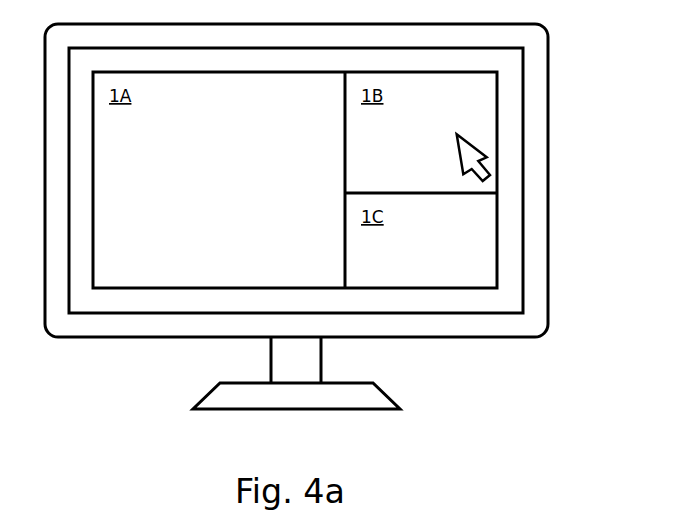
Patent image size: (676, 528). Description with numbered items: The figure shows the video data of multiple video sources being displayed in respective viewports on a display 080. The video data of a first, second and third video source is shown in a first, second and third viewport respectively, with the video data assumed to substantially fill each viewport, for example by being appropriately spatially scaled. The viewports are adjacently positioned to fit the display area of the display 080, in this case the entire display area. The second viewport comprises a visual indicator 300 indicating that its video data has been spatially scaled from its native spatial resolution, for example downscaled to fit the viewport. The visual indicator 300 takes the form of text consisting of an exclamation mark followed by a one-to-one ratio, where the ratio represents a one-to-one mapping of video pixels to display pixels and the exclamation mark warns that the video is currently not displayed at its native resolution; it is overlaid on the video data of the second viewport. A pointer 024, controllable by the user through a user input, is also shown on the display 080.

The display 080 is at (480, 340).
The visual indicator 300 is at (445, 107).
The pointer 024 is at (464, 180).